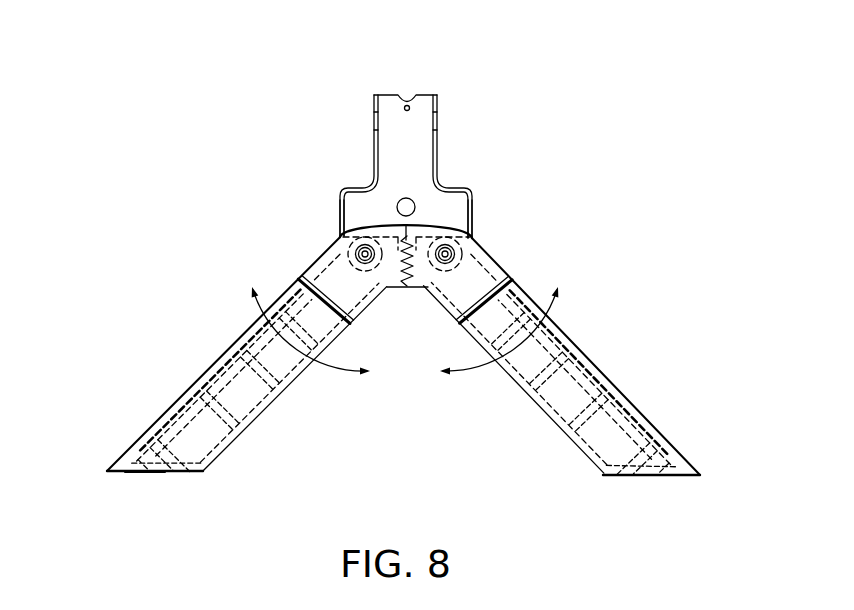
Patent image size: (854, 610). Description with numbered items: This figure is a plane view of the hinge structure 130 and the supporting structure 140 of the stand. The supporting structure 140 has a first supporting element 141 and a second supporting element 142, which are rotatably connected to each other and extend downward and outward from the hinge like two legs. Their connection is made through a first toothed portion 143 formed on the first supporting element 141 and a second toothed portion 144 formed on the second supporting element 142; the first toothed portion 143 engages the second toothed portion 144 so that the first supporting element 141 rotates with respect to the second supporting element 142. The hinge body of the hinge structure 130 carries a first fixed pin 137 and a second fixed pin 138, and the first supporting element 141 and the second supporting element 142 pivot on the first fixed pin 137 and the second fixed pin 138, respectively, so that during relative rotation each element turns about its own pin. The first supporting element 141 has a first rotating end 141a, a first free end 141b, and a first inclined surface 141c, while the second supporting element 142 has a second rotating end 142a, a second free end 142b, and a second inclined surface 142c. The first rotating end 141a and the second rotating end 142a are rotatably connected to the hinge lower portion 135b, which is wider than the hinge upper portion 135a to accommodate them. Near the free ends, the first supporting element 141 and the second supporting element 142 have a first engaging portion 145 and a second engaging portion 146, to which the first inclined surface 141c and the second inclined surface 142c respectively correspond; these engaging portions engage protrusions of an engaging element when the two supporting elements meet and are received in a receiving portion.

The hinge structure 130 is at (428, 92).
The hinge upper portion 135a is at (402, 143).
The hinge lower portion 135b is at (405, 290).
The first fixed pin 137 is at (476, 239).
The second fixed pin 138 is at (340, 230).
The supporting structure 140 is at (273, 252).
The first supporting element 141 is at (590, 357).
The first rotating end 141a is at (466, 232).
The first free end 141b is at (685, 463).
The first inclined surface 141c is at (686, 478).
The second supporting element 142 is at (222, 353).
The second rotating end 142a is at (340, 201).
The second free end 142b is at (128, 463).
The second inclined surface 142c is at (122, 476).
The first toothed portion 143 is at (447, 240).
The second toothed portion 144 is at (365, 253).
The first engaging portion 145 is at (663, 477).
The second engaging portion 146 is at (143, 476).